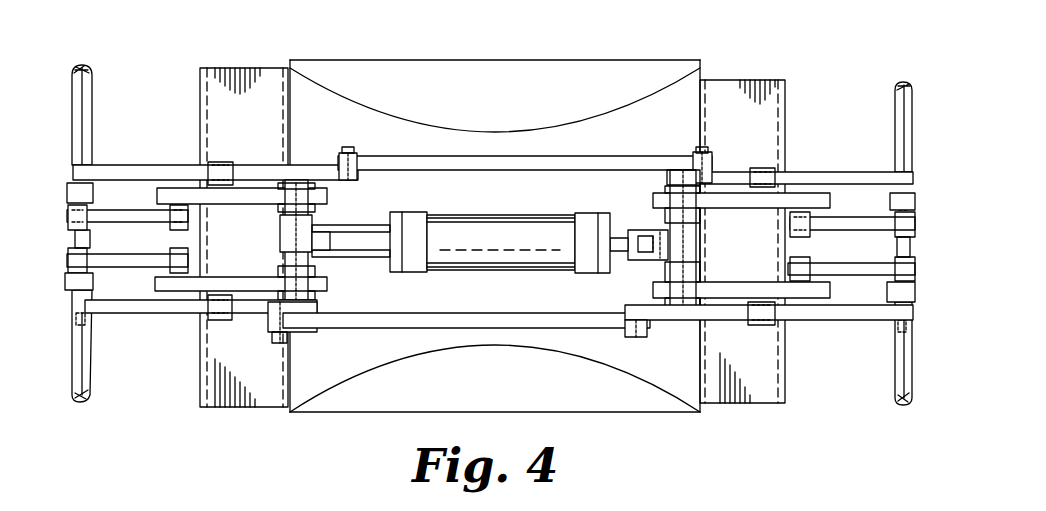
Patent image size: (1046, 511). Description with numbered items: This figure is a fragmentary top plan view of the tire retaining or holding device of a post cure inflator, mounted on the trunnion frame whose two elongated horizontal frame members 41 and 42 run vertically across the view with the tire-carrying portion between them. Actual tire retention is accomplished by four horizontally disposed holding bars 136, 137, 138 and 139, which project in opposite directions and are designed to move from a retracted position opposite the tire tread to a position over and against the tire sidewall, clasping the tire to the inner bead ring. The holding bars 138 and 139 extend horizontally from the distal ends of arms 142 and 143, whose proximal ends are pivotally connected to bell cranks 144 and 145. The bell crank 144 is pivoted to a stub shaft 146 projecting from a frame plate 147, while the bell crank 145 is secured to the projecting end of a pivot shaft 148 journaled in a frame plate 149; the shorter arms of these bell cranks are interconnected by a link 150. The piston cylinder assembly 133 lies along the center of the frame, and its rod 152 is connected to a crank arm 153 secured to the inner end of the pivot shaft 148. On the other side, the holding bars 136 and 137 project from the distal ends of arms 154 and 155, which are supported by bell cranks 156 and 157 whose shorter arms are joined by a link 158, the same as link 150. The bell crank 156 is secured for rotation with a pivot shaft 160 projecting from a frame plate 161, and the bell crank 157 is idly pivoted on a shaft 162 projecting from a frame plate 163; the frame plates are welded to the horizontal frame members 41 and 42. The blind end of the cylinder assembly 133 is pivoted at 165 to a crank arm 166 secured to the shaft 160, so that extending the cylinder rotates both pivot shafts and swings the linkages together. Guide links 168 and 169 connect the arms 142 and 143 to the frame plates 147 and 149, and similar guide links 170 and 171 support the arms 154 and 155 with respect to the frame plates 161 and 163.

The horizontal frame member 41 is at (260, 82).
The horizontal frame member 42 is at (744, 88).
The cylinder assembly 133 is at (445, 215).
The holding bar 136 is at (90, 97).
The holding bar 137 is at (893, 104).
The holding bar 138 is at (90, 374).
The holding bar 139 is at (893, 378).
The arm 142 is at (93, 282).
The arm 143 is at (888, 292).
The bell crank 144 is at (165, 315).
The bell crank 145 is at (842, 322).
The stub shaft 146 is at (290, 330).
The frame plate 147 is at (218, 280).
The pivot shaft 148 is at (684, 328).
The frame plate 149 is at (714, 294).
The link 150 is at (390, 330).
The rod 152 is at (612, 238).
The crank arm 153 is at (645, 236).
The arm 154 is at (93, 192).
The arm 155 is at (889, 203).
The bell crank 156 is at (127, 170).
The bell crank 157 is at (830, 175).
The link 158 is at (597, 156).
The pivot shaft 160 is at (305, 163).
The frame plate 161 is at (220, 203).
The shaft 162 is at (683, 163).
The frame plate 163 is at (716, 208).
The pivot 165 is at (328, 250).
The crank arm 166 is at (284, 240).
The guide link 168 is at (97, 228).
The guide link 169 is at (830, 232).
The guide link 170 is at (128, 222).
The guide link 171 is at (860, 230).